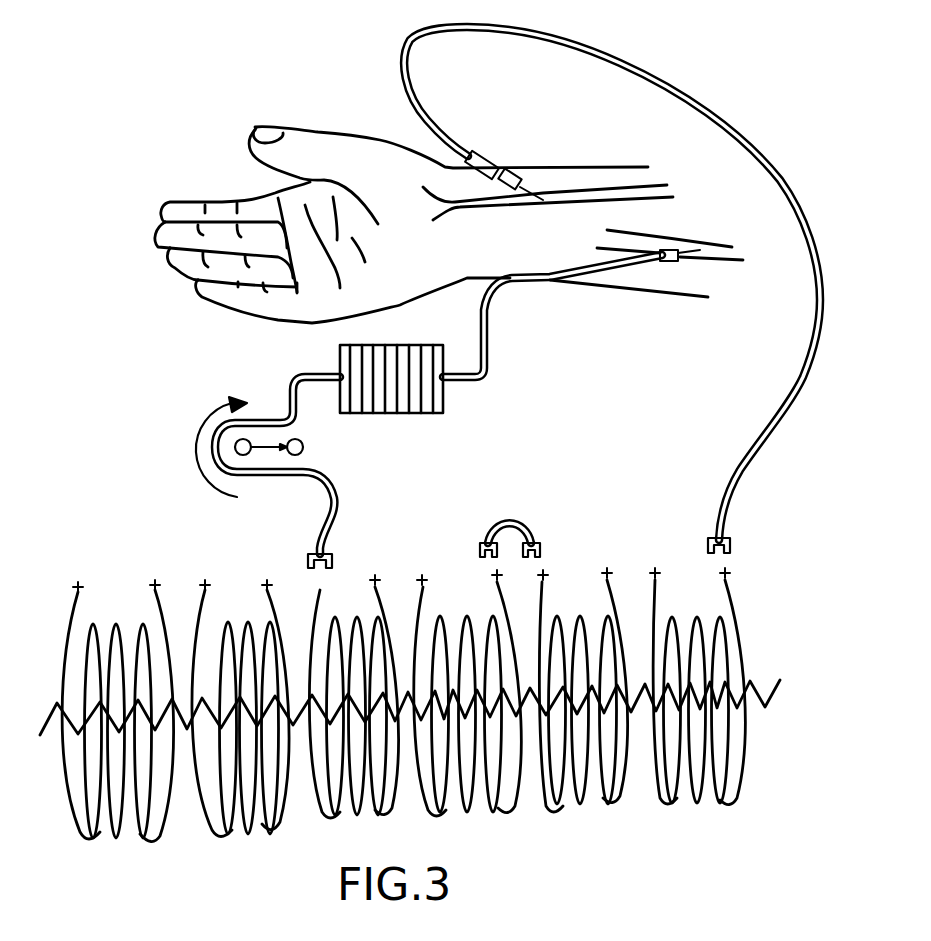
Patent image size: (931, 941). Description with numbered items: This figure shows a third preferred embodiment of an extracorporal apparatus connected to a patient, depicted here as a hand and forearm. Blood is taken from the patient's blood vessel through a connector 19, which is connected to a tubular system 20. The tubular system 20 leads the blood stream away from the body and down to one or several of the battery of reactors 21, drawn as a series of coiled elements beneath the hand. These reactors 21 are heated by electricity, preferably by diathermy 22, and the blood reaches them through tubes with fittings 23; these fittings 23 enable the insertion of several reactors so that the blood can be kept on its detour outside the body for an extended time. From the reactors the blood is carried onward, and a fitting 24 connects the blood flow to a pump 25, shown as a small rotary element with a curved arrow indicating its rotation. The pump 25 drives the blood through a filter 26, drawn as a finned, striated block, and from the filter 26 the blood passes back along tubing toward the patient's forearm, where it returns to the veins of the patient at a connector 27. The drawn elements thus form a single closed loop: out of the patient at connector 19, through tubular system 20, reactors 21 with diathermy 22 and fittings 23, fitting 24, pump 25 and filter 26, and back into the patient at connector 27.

The connector 19 is at (515, 173).
The tubular system 20 is at (722, 483).
The battery of reactors 21 is at (617, 682).
The diathermy 22 is at (653, 703).
The tubes with fittings 23 is at (508, 520).
The fitting 24 is at (328, 551).
The pump 25 is at (301, 447).
The filter 26 is at (405, 398).
The connector 27 is at (687, 269).